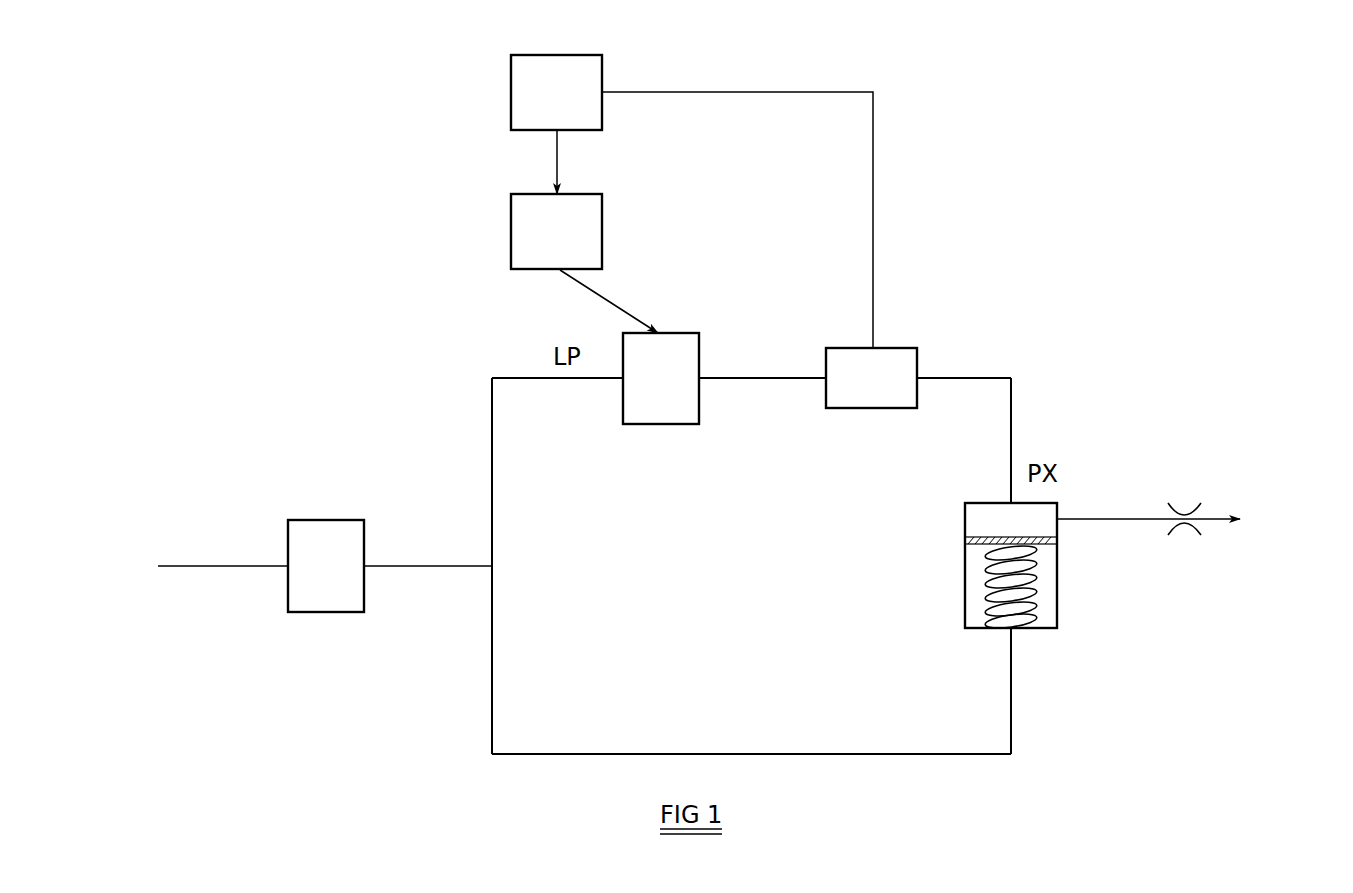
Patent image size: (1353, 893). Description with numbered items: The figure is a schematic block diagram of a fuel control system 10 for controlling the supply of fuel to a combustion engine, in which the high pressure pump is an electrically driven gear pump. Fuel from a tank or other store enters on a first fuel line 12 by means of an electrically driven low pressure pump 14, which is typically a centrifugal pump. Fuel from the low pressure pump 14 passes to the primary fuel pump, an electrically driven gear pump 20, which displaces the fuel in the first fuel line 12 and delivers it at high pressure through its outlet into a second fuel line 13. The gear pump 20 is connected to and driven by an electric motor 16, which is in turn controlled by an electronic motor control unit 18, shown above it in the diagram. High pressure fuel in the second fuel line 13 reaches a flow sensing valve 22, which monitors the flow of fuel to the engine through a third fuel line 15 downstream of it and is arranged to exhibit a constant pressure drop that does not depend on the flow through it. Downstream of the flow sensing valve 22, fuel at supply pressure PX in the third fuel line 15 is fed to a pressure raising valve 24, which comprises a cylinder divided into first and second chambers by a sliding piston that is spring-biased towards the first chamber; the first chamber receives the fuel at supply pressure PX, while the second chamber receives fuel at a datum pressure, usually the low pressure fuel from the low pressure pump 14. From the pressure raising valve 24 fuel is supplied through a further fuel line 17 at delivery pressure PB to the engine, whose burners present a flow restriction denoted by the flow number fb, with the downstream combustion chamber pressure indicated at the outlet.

The fuel control system 10 is at (983, 178).
The first fuel line 12 is at (228, 566).
The second fuel line 13 is at (757, 378).
The low pressure pump 14 is at (326, 548).
The third fuel line 15 is at (1013, 425).
The electric motor 16 is at (511, 232).
The further fuel line 17 is at (1141, 519).
The electronic motor control unit 18 is at (511, 92).
The gear pump 20 is at (660, 424).
The flow sensing valve 22 is at (900, 363).
The pressure raising valve 24 is at (1057, 587).